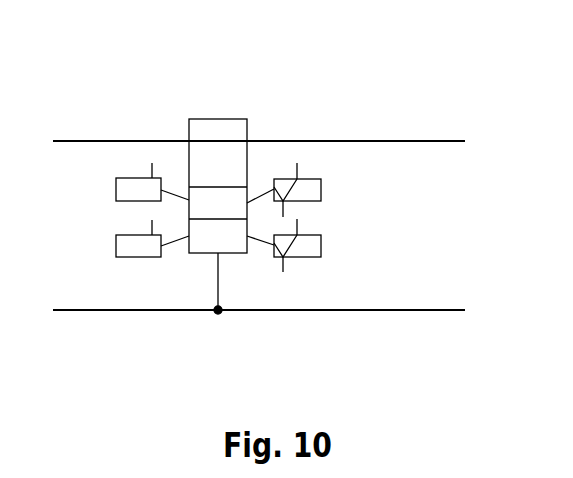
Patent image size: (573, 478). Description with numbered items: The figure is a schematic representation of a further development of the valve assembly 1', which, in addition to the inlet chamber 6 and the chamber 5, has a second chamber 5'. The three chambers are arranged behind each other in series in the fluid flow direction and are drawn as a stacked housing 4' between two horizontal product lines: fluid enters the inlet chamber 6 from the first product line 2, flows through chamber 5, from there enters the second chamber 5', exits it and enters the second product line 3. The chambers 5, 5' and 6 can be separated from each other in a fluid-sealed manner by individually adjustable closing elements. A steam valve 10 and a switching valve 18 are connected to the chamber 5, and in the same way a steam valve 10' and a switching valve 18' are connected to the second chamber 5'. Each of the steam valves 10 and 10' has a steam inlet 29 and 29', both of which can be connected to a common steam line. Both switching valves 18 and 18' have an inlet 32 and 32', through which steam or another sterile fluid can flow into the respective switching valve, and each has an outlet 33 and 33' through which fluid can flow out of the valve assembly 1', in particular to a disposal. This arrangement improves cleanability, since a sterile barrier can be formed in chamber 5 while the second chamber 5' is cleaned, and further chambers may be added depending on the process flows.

The valve assembly 1' is at (300, 134).
The first product line 2 is at (440, 141).
The second product line 3 is at (440, 310).
The control unit 4' is at (218, 146).
The chamber 5 is at (198, 141).
The second chamber 5' is at (201, 294).
The inlet chamber 6 is at (232, 130).
The steam valve 10 is at (111, 189).
The steam valve 10' is at (119, 264).
The steam inlet 29 is at (100, 160).
The steam inlet 29' is at (97, 228).
The switching valve 18 is at (329, 180).
The switching valve 18' is at (332, 259).
The inlet 32 is at (330, 160).
The inlet 32' is at (357, 237).
The outlet 33 is at (338, 203).
The outlet 33' is at (329, 280).